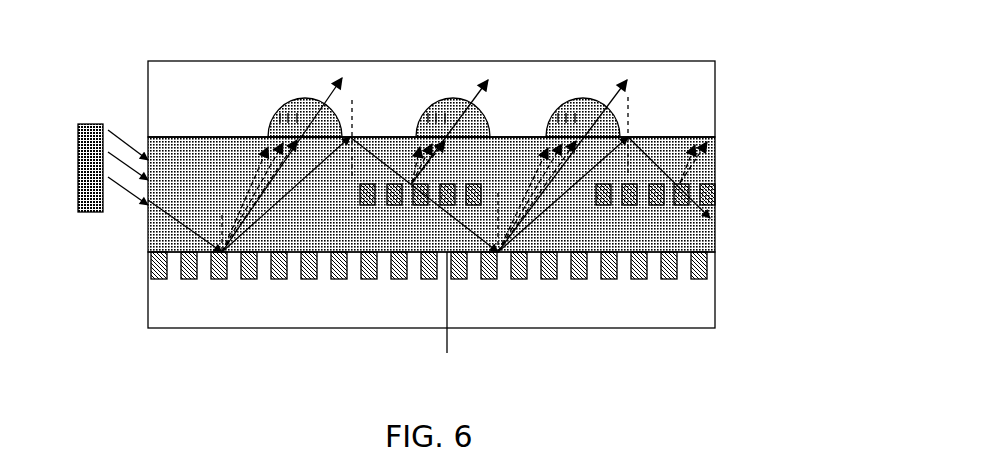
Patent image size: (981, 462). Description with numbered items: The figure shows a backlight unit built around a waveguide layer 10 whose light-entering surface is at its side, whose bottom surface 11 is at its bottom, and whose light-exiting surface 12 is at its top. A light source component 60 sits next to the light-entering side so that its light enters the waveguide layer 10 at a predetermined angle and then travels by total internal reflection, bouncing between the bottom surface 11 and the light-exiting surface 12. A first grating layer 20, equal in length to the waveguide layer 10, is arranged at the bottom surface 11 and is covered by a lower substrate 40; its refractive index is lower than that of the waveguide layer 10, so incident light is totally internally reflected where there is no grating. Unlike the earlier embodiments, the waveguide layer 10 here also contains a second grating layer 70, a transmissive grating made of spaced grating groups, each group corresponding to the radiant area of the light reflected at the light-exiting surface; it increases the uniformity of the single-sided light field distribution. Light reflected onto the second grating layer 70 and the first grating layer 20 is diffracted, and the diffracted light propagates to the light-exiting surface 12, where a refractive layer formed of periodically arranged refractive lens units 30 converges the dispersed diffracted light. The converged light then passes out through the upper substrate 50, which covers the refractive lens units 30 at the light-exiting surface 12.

The waveguide layer 10 is at (703, 158).
The bottom surface 11 is at (463, 310).
The light-exiting surface 12 is at (382, 137).
The first grating layer 20 is at (705, 263).
The refractive lens unit 30 is at (617, 128).
The lower substrate 40 is at (698, 308).
The upper substrate 50 is at (695, 75).
The light source component 60 is at (78, 168).
The second grating layer 70 is at (715, 197).